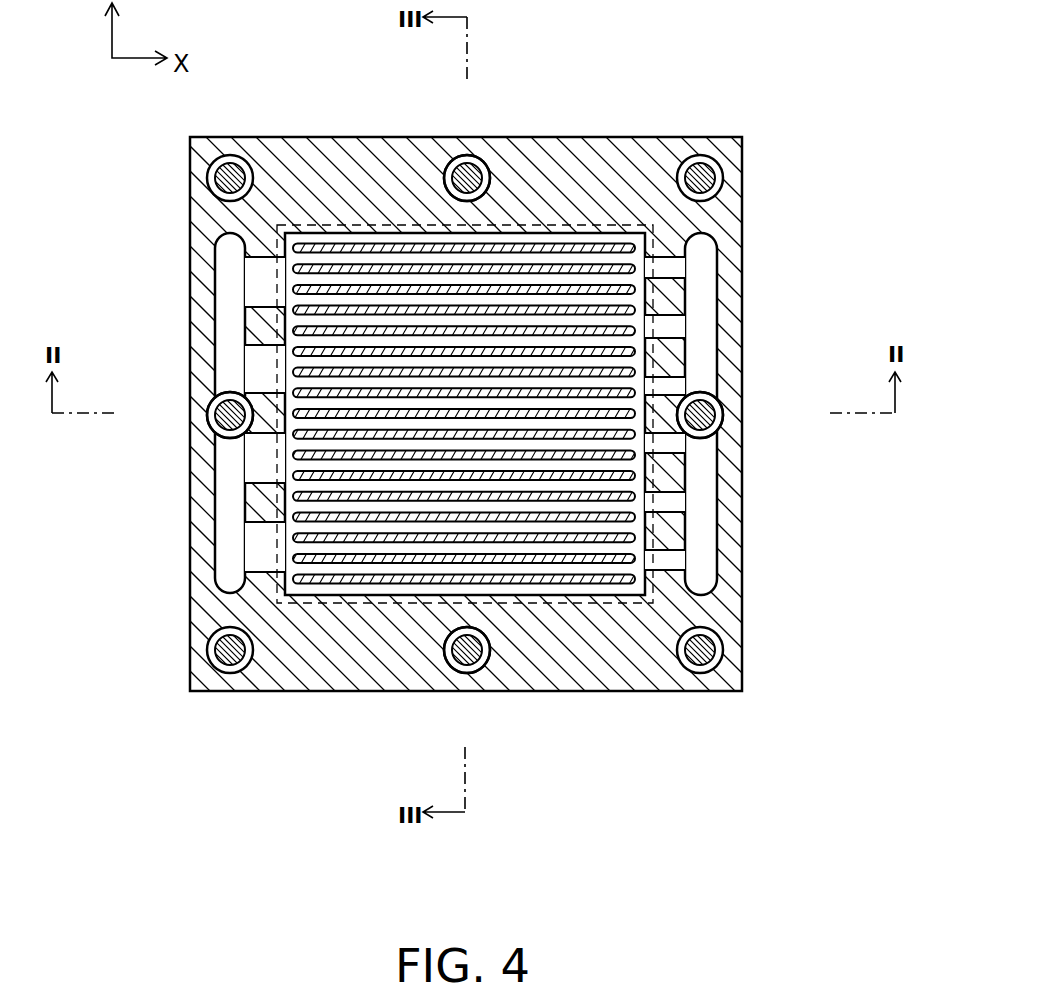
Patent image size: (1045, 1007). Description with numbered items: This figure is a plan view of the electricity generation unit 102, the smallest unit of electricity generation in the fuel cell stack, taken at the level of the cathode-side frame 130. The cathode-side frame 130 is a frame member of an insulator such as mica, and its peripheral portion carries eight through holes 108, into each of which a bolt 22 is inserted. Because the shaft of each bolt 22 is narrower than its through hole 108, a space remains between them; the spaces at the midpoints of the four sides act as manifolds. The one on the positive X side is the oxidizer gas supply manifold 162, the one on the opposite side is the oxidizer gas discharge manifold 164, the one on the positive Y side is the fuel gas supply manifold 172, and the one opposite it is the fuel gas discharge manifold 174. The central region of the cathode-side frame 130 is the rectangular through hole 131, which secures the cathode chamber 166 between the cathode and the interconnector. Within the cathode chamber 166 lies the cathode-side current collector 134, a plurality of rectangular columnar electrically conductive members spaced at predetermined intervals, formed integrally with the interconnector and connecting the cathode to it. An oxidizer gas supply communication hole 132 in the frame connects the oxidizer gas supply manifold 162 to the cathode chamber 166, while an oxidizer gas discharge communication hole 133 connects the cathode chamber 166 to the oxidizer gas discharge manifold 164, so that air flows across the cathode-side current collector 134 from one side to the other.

The bolt 22 is at (213, 172).
The electricity generation unit 102 is at (522, 415).
The through hole 108 is at (230, 162).
The cathode-side frame 130 is at (200, 225).
The rectangular through hole 131 is at (277, 284).
The oxidizer gas supply communication hole 132 is at (702, 335).
The oxidizer gas discharge communication hole 133 is at (201, 413).
The cathode-side current collector 134 is at (548, 246).
The oxidizer gas supply manifold 162 is at (725, 405).
The oxidizer gas discharge manifold 164 is at (205, 405).
The cathode chamber 166 is at (602, 240).
The fuel gas supply manifold 172 is at (480, 163).
The fuel gas discharge manifold 174 is at (453, 660).